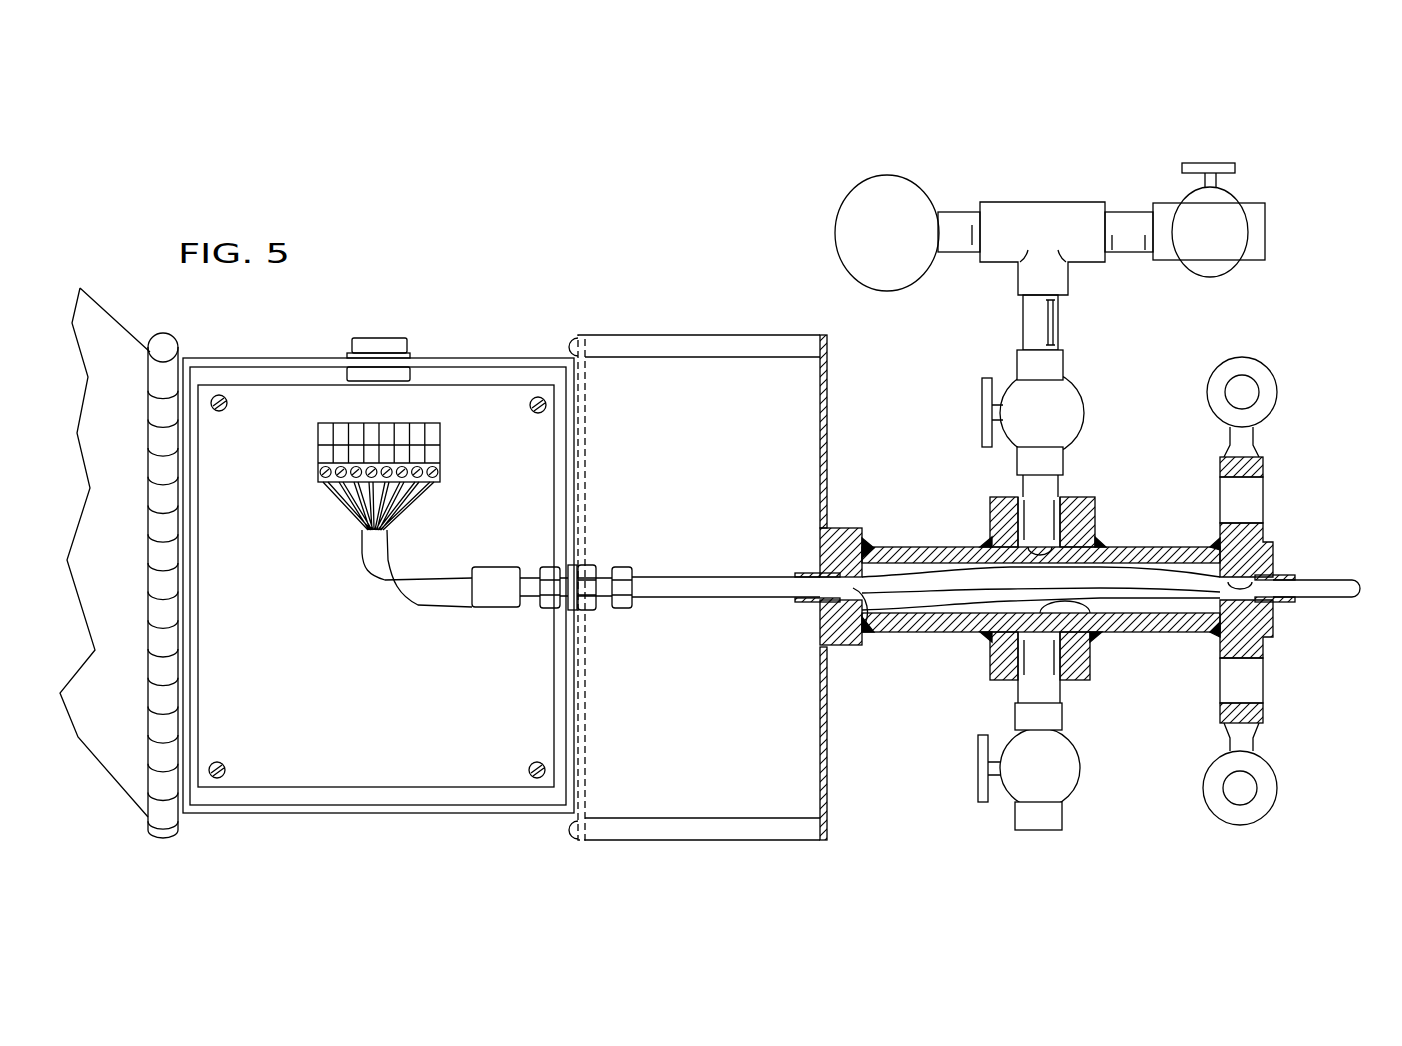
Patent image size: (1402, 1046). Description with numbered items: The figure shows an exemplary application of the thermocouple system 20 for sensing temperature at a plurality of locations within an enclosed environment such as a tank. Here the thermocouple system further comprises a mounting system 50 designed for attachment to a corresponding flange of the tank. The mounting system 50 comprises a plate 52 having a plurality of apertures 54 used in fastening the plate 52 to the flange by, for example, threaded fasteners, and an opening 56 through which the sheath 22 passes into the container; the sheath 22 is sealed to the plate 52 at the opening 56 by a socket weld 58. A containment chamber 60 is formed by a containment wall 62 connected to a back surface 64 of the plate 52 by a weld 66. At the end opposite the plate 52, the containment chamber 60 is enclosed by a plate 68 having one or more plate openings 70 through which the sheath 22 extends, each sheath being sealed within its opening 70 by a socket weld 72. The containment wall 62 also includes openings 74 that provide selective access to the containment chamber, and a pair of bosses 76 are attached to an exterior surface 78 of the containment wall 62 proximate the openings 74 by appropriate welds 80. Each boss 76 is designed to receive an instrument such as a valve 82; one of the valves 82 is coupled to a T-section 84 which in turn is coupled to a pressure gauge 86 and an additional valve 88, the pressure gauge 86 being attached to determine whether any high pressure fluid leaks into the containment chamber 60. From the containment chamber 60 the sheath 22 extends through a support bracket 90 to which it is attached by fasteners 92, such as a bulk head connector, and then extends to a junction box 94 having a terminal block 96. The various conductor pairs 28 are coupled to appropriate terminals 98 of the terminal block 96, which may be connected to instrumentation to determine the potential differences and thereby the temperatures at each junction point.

The thermocouple system 20 is at (1358, 398).
The sheath 22 is at (1332, 585).
The conductor pairs 28 is at (420, 518).
The mounting system 50 is at (1258, 716).
The plate 52 is at (1255, 635).
The apertures 54 is at (1233, 482).
The opening 56 is at (1265, 562).
The socket weld 58 is at (1288, 578).
The containment chamber 60 is at (952, 607).
The containment wall 62 is at (1152, 632).
The back surface 64 is at (1218, 530).
The weld 66 is at (1217, 634).
The plate 68 is at (848, 528).
The plate openings 70 is at (868, 622).
The socket weld 72 is at (812, 590).
The openings 74 is at (1030, 545).
The bosses 76 is at (1085, 505).
The exterior surface 78 is at (914, 642).
The welds 80 is at (1092, 547).
The valve 82 is at (1028, 370).
The T-section 84 is at (1048, 215).
The pressure gauge 86 is at (888, 175).
The additional valve 88 is at (1225, 200).
The support bracket 90 is at (700, 345).
The fasteners 92 is at (592, 560).
The junction box 94 is at (478, 356).
The terminal block 96 is at (318, 452).
The terminals 98 is at (448, 470).